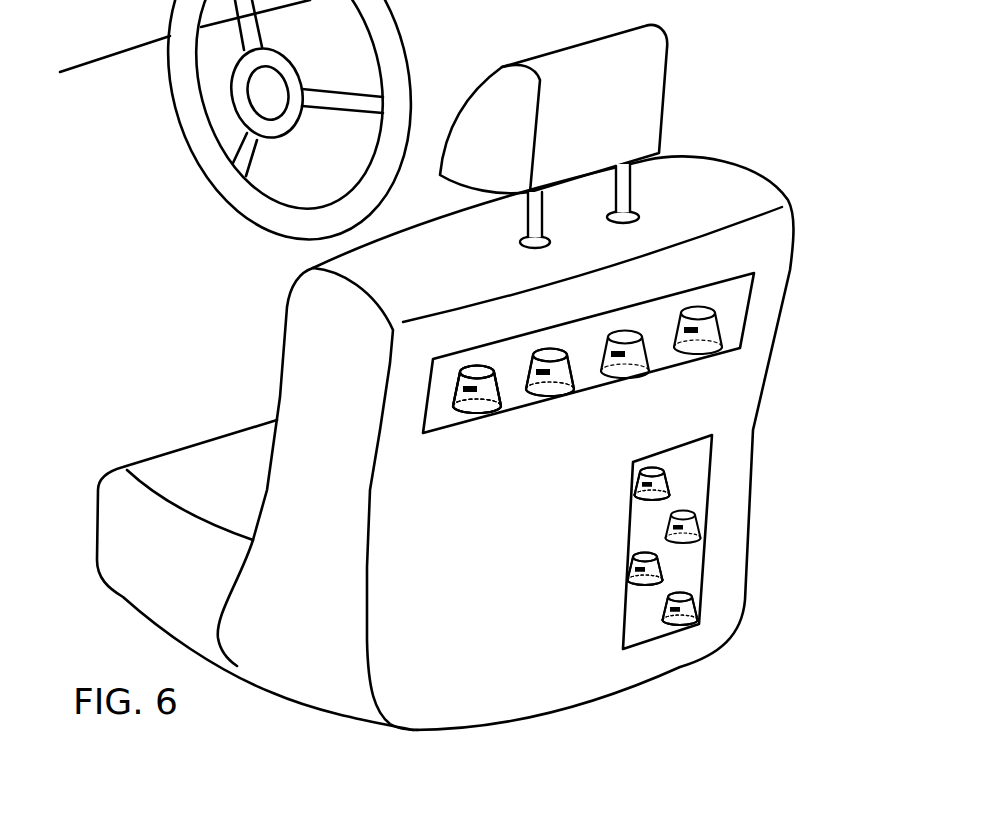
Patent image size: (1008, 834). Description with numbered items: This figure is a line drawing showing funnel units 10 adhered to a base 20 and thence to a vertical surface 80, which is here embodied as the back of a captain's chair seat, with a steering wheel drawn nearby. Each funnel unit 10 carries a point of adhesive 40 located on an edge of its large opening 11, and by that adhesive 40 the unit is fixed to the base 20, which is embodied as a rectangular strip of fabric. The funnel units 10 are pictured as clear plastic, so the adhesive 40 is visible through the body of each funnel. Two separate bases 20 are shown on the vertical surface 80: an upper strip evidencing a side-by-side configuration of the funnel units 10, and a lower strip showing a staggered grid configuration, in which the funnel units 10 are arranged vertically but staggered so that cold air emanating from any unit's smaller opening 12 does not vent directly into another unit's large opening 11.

The funnel unit 10 is at (462, 386).
The large opening 11 is at (468, 409).
The smaller opening 12 is at (633, 552).
The base 20 is at (737, 297).
The adhesive 40 is at (540, 368).
The vertical surface 80 is at (733, 467).